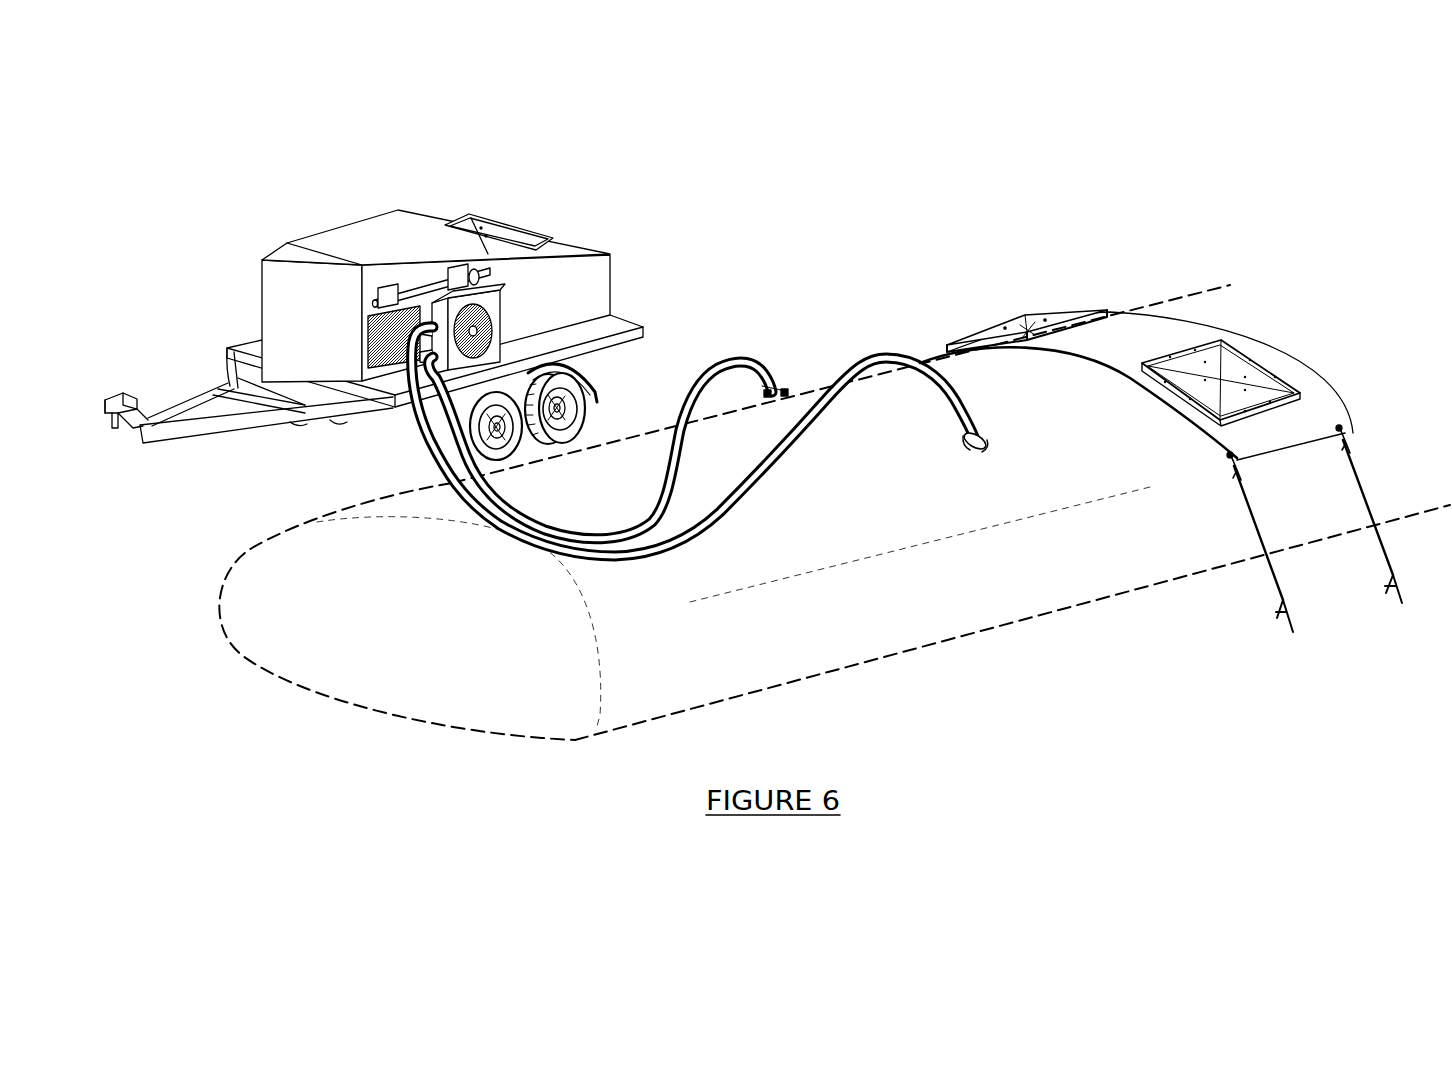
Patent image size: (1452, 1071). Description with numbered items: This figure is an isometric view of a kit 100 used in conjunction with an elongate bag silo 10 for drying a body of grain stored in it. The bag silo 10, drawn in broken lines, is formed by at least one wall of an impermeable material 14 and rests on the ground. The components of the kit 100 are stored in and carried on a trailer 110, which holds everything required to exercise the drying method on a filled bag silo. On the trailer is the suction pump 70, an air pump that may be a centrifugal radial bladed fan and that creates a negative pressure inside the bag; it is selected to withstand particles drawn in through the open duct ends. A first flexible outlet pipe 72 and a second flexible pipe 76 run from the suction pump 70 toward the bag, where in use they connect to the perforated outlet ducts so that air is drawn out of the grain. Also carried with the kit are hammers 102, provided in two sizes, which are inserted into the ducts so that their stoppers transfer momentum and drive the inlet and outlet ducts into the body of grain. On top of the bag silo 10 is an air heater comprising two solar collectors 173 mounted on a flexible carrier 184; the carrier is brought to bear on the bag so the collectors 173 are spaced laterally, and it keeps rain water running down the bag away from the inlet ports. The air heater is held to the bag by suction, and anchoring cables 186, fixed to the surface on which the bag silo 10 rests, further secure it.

The bag silo 10 is at (1120, 684).
The wall of impermeable material 14 is at (905, 618).
The suction pump 70 is at (497, 327).
The first flexible outlet pipe 72 is at (878, 358).
The second flexible pipe 76 is at (738, 360).
The kit 100 is at (268, 136).
The hammers 102 is at (428, 290).
The trailer 110 is at (275, 468).
The second solar collector 173 is at (1037, 318).
The flexible carrier 184 is at (1110, 347).
The anchoring cables 186 is at (1265, 530).